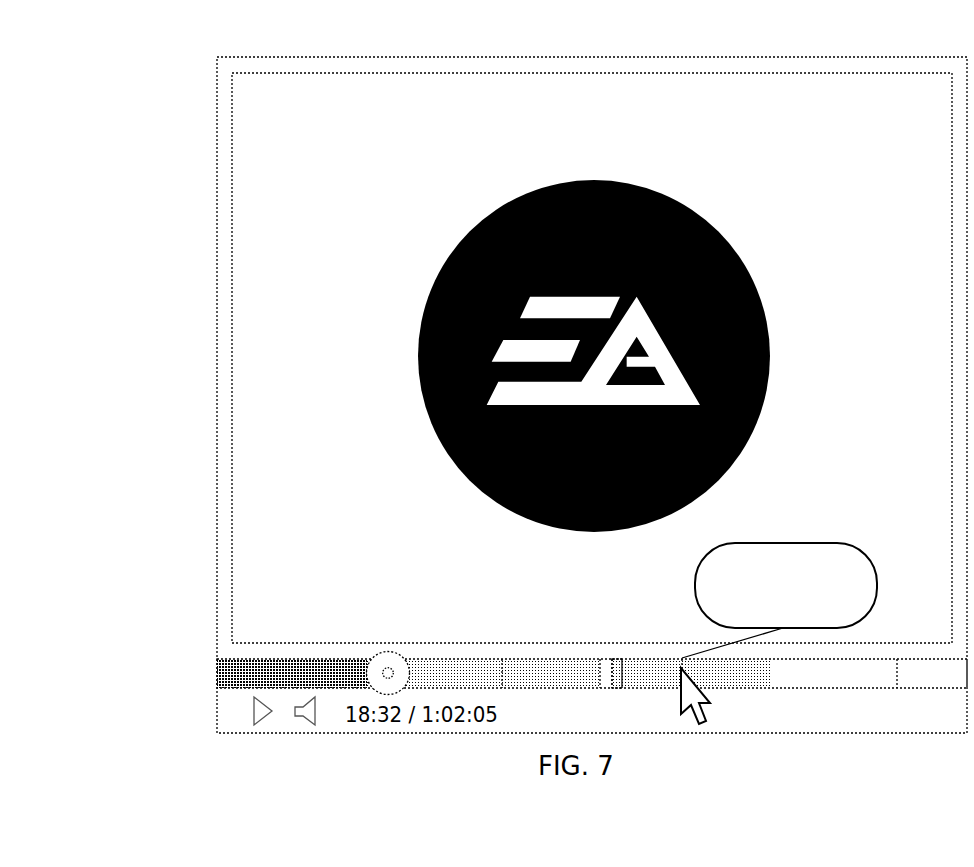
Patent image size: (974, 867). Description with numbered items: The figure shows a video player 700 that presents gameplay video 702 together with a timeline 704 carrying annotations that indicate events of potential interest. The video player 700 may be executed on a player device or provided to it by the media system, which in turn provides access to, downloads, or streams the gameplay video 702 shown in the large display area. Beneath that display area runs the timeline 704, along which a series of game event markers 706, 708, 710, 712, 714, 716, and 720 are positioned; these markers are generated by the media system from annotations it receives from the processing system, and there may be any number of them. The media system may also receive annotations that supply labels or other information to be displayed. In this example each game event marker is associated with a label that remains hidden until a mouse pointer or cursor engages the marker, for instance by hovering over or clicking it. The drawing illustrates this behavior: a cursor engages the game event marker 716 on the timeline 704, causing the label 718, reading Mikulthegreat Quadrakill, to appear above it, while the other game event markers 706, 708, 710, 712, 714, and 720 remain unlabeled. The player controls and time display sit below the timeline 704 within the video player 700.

The video player 700 is at (82, 137).
The gameplay video 702 is at (618, 75).
The timeline 704 is at (233, 672).
The game event marker 706 is at (307, 662).
The game event marker 708 is at (502, 658).
The game event marker 710 is at (600, 658).
The game event marker 712 is at (612, 688).
The game event marker 714 is at (622, 658).
The game event marker 716 is at (683, 667).
The label 718 is at (813, 543).
The game event marker 720 is at (897, 673).